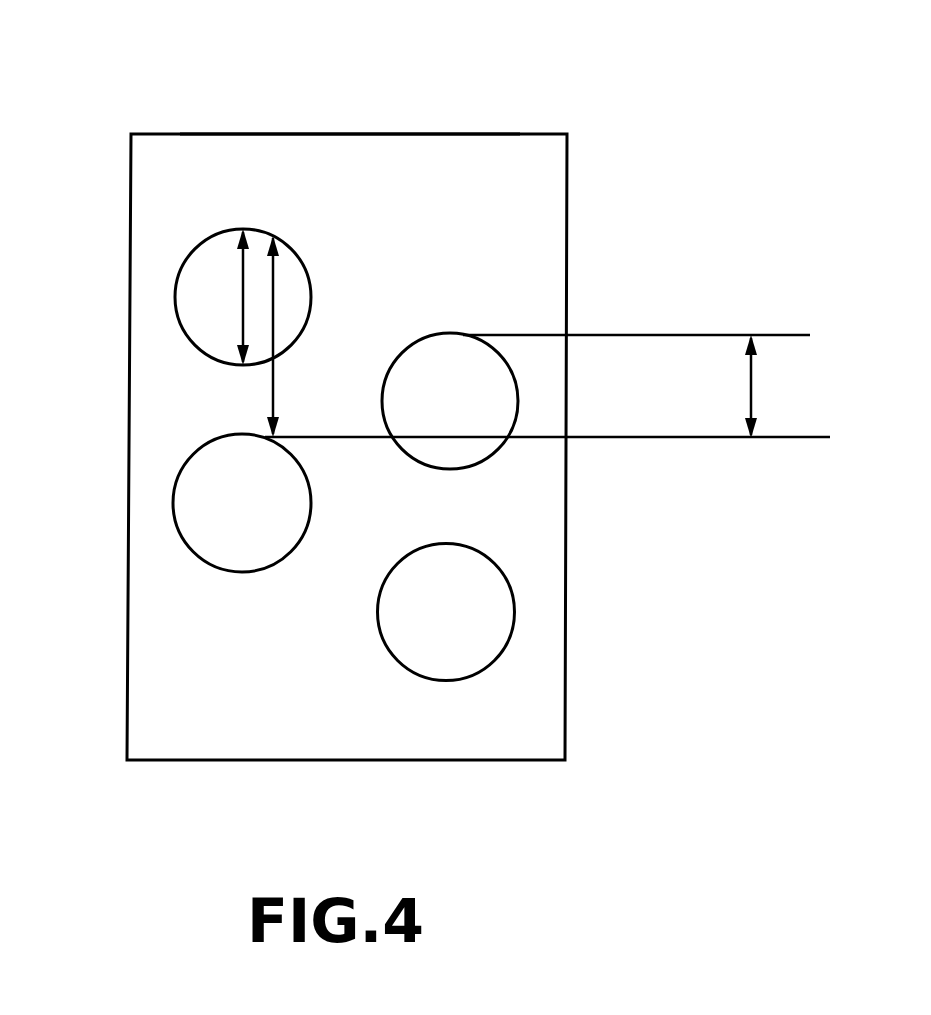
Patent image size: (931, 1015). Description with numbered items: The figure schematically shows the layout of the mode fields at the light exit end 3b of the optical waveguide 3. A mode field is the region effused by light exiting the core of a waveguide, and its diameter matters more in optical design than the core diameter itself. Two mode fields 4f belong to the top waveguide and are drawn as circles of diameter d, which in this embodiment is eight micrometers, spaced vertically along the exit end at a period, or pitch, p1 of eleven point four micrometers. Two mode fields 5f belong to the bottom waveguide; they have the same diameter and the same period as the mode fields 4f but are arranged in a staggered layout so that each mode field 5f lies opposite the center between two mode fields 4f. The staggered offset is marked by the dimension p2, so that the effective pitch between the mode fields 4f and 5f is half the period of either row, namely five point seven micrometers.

The optical waveguide 3 is at (567, 205).
The light exit end 3b is at (464, 168).
The mode field of the top waveguide 4f is at (188, 333).
The mode field of the bottom waveguide 5f is at (489, 460).
The mode field diameter d is at (227, 297).
The pitch of the mode field layout p1 is at (547, 336).
The second pitch p2 is at (649, 386).